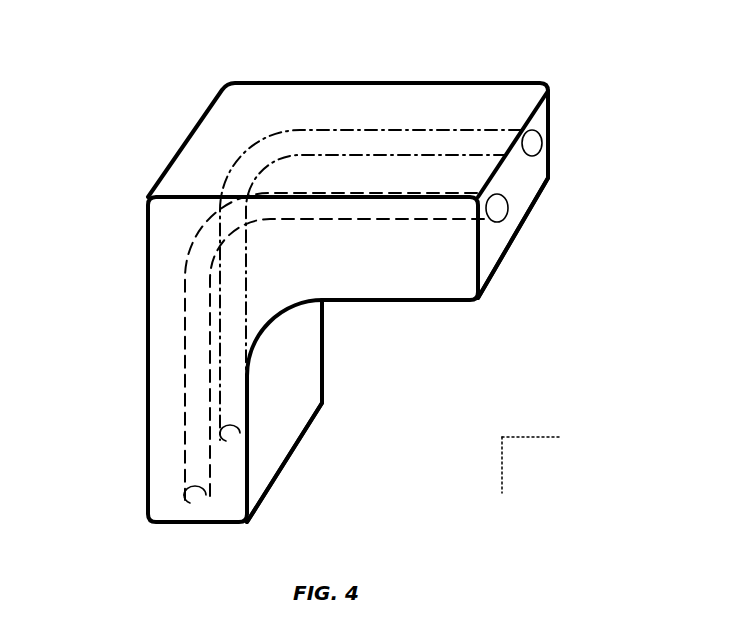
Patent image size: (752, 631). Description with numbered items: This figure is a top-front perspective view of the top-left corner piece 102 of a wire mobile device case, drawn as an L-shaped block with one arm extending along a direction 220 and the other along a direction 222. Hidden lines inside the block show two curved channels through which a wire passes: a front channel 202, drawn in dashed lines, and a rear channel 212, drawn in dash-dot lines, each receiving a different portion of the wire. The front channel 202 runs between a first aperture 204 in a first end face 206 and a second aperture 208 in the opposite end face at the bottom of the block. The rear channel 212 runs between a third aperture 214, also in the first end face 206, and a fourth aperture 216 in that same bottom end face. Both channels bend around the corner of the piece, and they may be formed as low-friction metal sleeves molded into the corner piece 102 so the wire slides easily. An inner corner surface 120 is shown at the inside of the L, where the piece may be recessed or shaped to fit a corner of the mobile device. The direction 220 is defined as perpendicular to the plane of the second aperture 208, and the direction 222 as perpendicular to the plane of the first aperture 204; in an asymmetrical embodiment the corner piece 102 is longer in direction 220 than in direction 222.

The top-left corner piece 102 is at (240, 110).
The inner corner surface 120 is at (312, 367).
The front channel 202 is at (181, 332).
The first aperture 204 is at (514, 208).
The first end face 206 is at (495, 243).
The second aperture 208 is at (190, 515).
The rear channel 212 is at (403, 128).
The third aperture 214 is at (549, 143).
The fourth aperture 216 is at (229, 460).
The direction 220 is at (503, 484).
The direction 222 is at (555, 436).